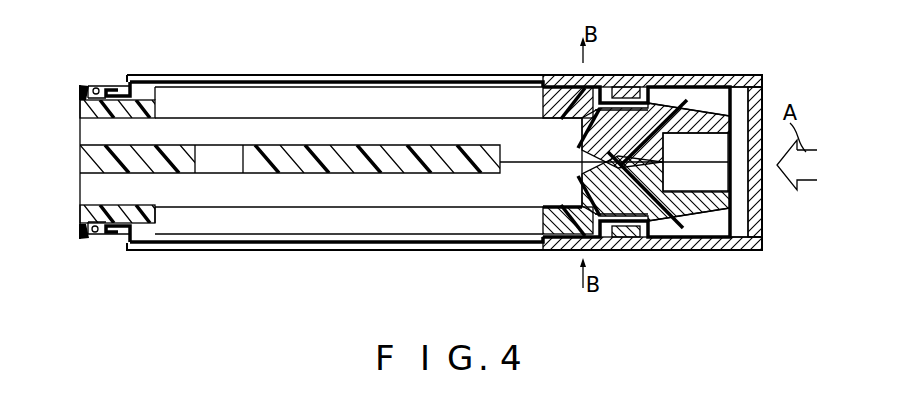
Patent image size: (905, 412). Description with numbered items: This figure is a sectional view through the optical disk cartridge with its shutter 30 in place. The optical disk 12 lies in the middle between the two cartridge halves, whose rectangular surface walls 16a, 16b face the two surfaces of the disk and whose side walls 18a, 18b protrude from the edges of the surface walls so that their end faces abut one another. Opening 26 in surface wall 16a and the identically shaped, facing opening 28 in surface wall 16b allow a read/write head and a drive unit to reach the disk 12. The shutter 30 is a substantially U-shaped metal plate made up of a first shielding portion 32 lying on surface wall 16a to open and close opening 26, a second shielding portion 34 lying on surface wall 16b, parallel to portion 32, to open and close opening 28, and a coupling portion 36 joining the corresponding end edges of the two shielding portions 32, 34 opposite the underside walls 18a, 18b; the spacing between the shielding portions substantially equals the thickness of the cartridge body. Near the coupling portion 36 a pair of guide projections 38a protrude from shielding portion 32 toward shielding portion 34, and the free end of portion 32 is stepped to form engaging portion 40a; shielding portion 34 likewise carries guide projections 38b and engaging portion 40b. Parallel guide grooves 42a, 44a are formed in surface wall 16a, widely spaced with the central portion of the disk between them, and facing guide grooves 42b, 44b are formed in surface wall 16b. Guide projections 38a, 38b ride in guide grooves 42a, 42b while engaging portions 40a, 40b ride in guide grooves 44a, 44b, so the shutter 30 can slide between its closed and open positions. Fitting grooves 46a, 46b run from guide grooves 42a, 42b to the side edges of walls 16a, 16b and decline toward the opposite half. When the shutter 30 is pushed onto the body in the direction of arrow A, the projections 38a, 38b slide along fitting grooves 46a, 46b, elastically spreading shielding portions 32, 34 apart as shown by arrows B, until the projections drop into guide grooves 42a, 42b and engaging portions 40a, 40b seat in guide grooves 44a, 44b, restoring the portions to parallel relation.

The optical disk 12 is at (313, 128).
The surface wall 16a is at (558, 87).
The surface wall 16b is at (561, 234).
The side wall 18a is at (751, 85).
The side wall 18b is at (728, 210).
The opening 26 is at (543, 86).
The opening 28 is at (542, 207).
The shutter 30 is at (756, 72).
The first shielding portion 32 is at (392, 75).
The second shielding portion 34 is at (387, 248).
The coupling portion 36 is at (763, 205).
The guide projection 38a is at (634, 87).
The guide projection 38b is at (632, 237).
The engaging portion 40a is at (120, 93).
The engaging portion 40b is at (120, 230).
The guide groove 42a is at (580, 130).
The guide groove 42b is at (608, 208).
The guide groove 44a is at (102, 88).
The guide groove 44b is at (96, 233).
The fitting groove 46a is at (702, 85).
The fitting groove 46b is at (698, 228).